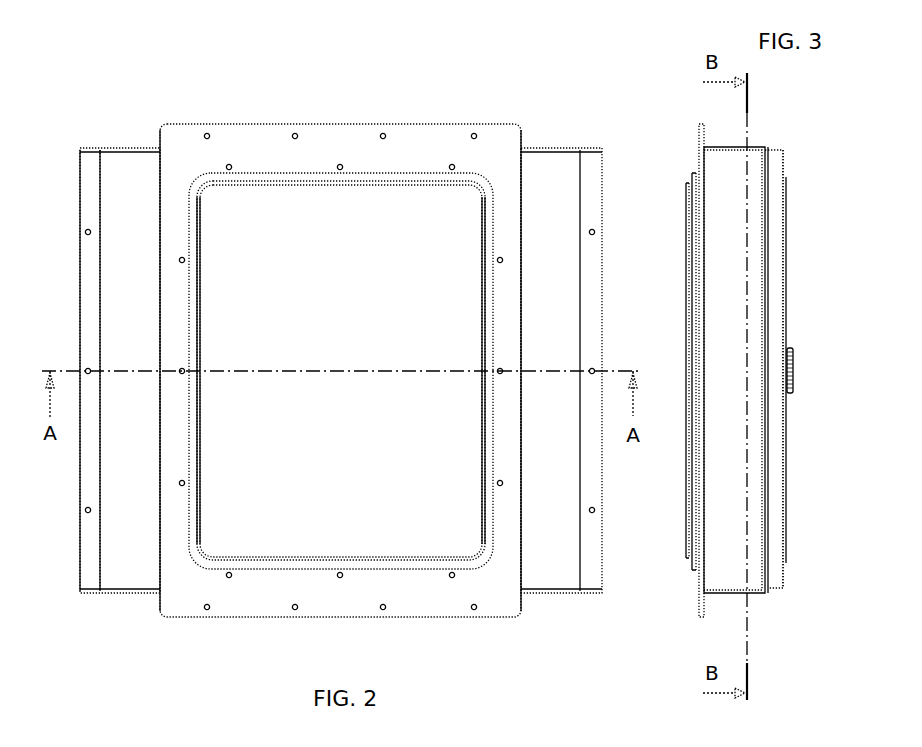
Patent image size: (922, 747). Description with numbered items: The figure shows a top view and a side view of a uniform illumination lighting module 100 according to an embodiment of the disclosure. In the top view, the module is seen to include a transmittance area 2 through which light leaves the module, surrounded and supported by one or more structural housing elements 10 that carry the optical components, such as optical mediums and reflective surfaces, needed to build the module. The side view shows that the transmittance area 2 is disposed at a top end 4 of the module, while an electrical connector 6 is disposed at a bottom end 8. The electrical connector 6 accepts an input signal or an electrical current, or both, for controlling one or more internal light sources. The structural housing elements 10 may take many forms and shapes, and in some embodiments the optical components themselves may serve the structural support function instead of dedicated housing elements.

In FIG. 2, the uniform illumination lighting module 100 is at (147, 64).
In FIG. 2, the structural housing element 10 is at (270, 157).
In FIG. 2, the transmittance area 2 is at (383, 212).
In FIG. 3, the transmittance area 2 is at (683, 221).
In FIG. 3, the top end 4 is at (673, 542).
In FIG. 3, the electrical connector 6 is at (793, 366).
In FIG. 3, the bottom end 8 is at (792, 542).